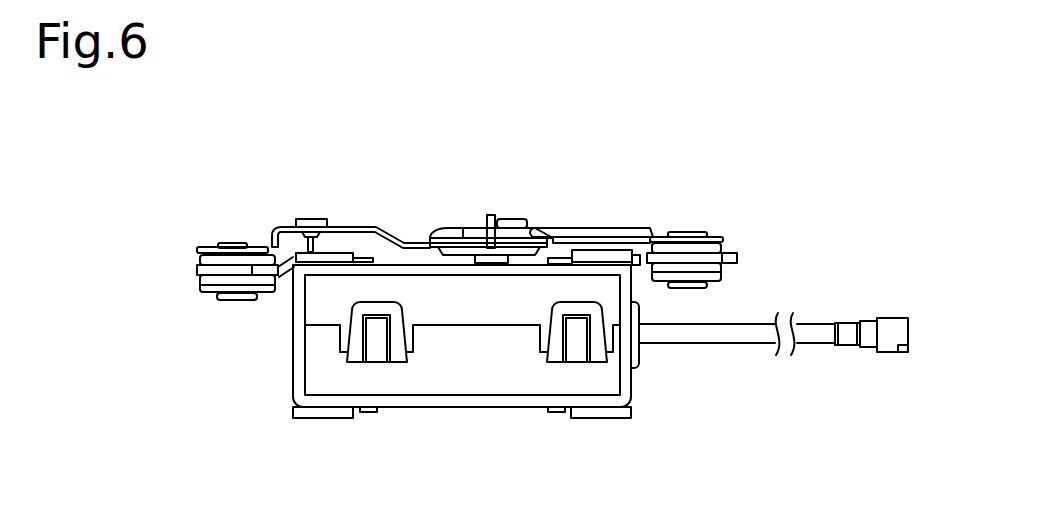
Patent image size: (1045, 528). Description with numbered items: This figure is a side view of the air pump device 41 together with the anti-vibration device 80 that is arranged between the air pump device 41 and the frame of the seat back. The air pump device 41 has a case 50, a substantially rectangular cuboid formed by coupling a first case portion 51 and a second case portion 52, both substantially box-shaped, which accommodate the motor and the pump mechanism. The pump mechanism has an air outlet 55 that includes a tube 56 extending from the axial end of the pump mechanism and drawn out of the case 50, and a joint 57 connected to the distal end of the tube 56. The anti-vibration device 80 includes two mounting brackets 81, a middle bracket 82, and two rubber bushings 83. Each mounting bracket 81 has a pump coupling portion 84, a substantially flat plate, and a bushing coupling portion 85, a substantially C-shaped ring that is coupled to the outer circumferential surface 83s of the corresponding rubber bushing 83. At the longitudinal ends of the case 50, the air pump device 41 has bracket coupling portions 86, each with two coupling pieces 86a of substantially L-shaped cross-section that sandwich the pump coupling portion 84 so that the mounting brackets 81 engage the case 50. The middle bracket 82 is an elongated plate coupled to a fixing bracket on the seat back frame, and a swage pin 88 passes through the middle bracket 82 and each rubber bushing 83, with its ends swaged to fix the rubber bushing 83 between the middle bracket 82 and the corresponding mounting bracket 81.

The air pump device 41 is at (681, 453).
The case 50 is at (215, 317).
The first case portion 51 is at (293, 367).
The second case portion 52 is at (293, 317).
The air outlet 55 is at (903, 398).
The tube 56 is at (819, 345).
The joint 57 is at (880, 350).
The anti-vibration device 80 is at (781, 172).
The mounting bracket 81 is at (474, 251).
The bushing coupling portion 85 is at (197, 272).
The rubber bushing 83 is at (462, 289).
The outer circumferential surface 83s is at (197, 279).
The pump coupling portion 84 is at (361, 258).
The bracket coupling portion 86 is at (475, 205).
The coupling piece 86a is at (324, 261).
The swage pin 88 is at (243, 241).
The middle bracket 82 is at (449, 229).